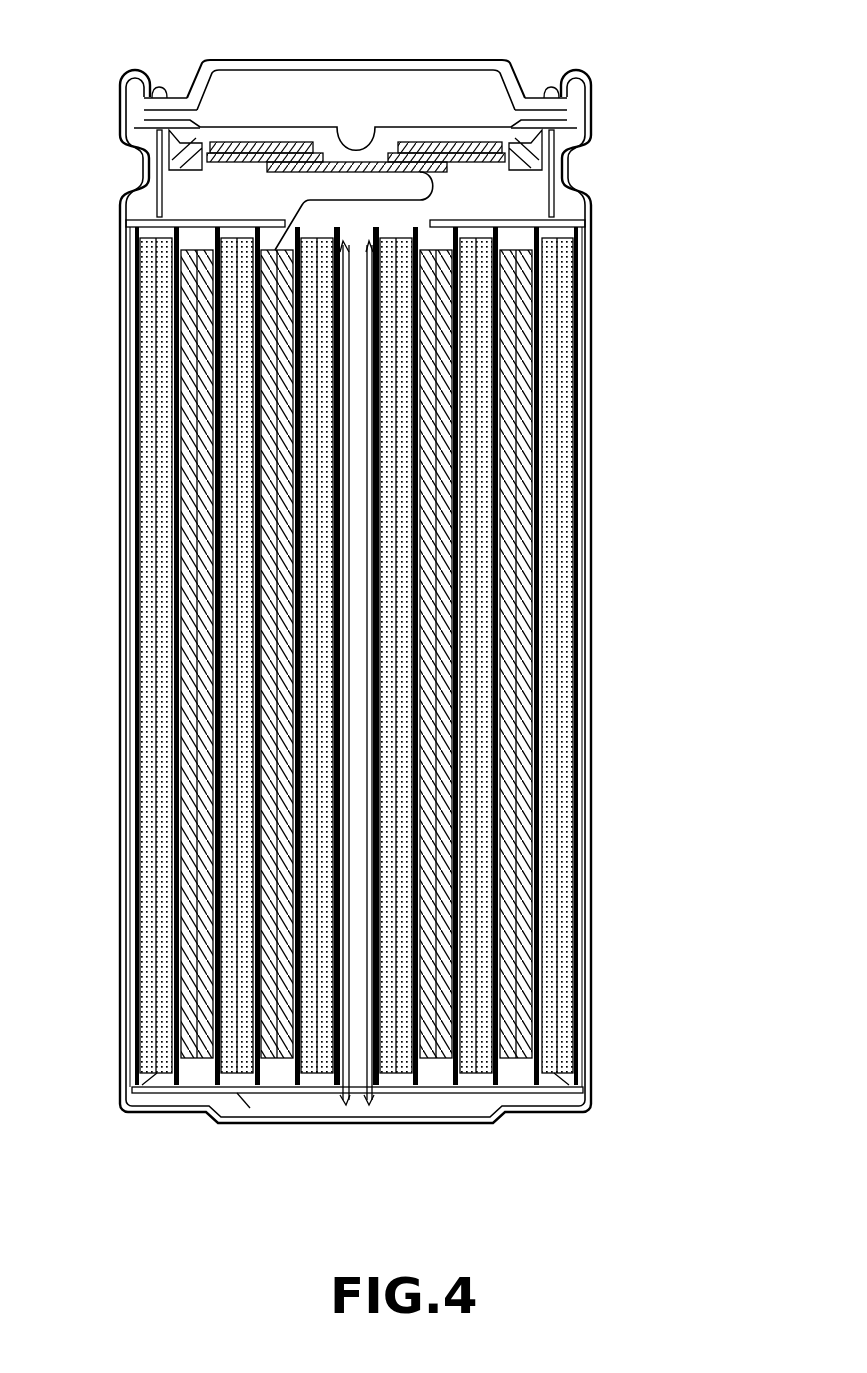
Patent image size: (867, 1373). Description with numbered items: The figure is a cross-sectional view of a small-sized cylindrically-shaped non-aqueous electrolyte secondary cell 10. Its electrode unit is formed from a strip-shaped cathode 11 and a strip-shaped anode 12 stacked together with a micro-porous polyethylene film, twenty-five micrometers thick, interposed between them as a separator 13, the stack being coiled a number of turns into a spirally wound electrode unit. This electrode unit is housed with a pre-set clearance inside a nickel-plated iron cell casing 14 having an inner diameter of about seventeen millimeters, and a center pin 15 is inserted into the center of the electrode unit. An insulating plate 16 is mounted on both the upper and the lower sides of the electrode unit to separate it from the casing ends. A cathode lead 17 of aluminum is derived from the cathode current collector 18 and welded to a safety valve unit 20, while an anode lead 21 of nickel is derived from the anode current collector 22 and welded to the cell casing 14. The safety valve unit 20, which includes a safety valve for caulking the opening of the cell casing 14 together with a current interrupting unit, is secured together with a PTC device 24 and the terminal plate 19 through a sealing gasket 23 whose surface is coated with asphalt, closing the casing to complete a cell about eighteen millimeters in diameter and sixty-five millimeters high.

The small-sized cylindrically-shaped non-aqueous electrolyte secondary cell 10 is at (416, 608).
The strip-shaped cathode 11 is at (527, 372).
The strip-shaped anode 12 is at (565, 460).
The separator 13 is at (540, 537).
The cell casing 14 is at (391, 628).
The center pin 15 is at (350, 1073).
The insulating plate 16 is at (570, 1093).
The cathode lead 17 is at (436, 187).
The cathode current collector 18 is at (510, 682).
The terminal plate 19 is at (400, 60).
The safety valve unit 20 is at (292, 127).
The anode lead 21 is at (240, 1095).
The anode current collector 22 is at (548, 735).
The sealing gasket 23 is at (573, 88).
The PTC device 24 is at (577, 108).